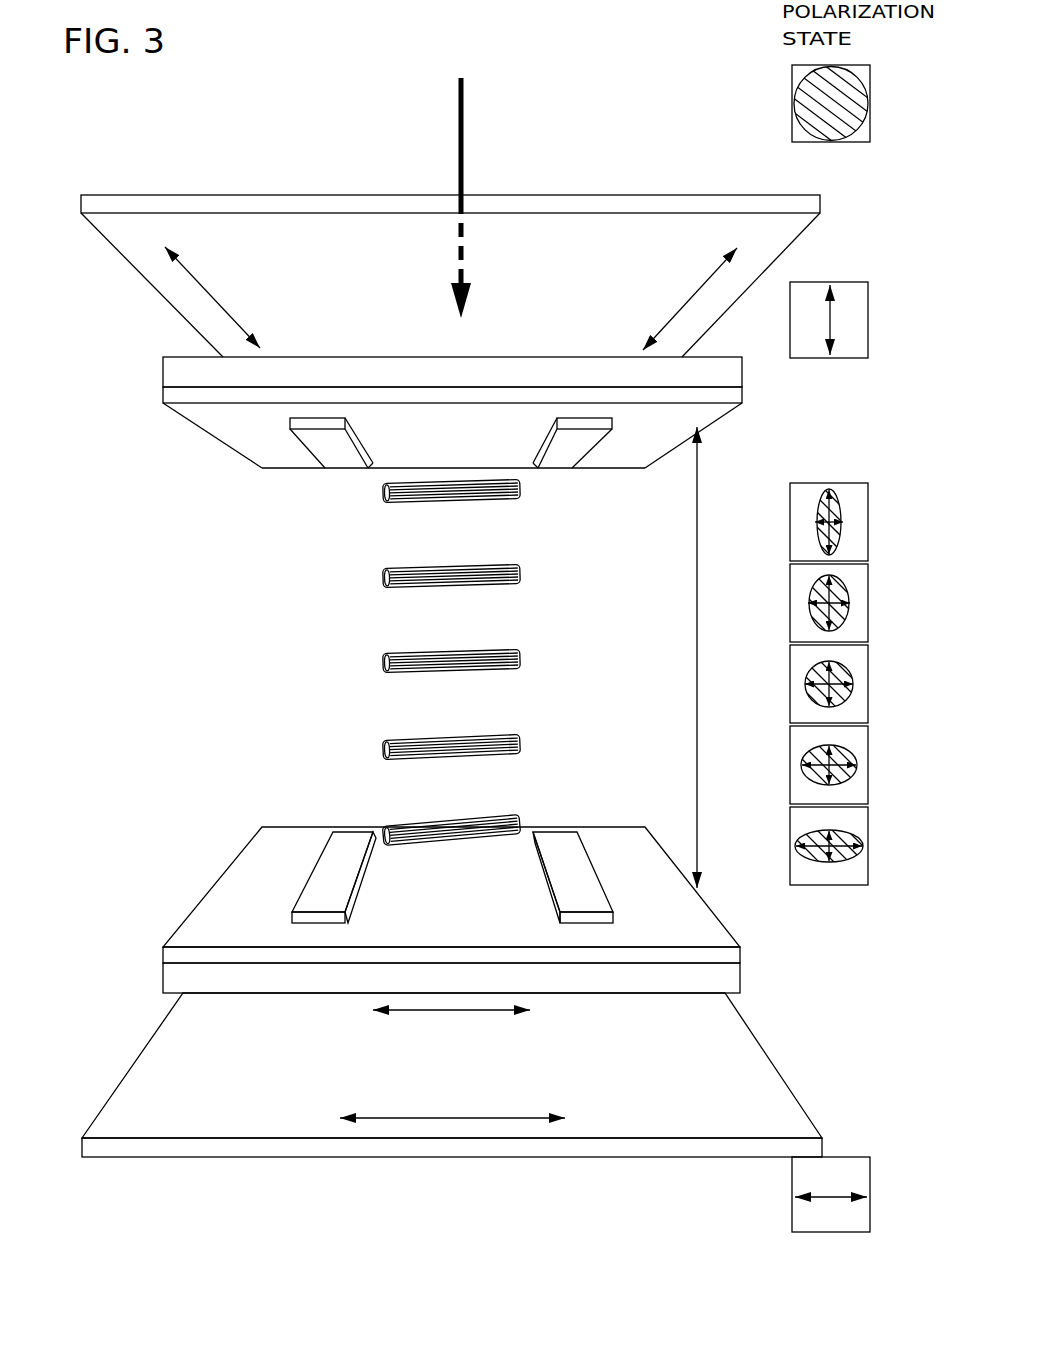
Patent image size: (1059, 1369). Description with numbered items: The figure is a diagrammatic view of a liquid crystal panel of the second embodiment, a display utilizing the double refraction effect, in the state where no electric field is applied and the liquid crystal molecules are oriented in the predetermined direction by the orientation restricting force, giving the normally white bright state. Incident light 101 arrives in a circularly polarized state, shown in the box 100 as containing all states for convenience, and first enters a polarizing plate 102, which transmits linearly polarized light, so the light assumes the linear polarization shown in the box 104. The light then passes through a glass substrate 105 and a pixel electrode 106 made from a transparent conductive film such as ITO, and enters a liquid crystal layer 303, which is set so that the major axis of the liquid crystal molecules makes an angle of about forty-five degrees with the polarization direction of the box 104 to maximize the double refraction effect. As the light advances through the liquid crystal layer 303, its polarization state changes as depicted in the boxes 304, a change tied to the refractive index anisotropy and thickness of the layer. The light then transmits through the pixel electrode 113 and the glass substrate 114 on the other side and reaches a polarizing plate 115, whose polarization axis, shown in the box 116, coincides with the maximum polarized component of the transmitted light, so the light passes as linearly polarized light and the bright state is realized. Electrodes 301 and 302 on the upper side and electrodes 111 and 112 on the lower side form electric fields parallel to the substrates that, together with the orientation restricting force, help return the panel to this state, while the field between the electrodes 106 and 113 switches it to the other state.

The box 100 is at (832, 123).
The incident light 101 is at (462, 122).
The polarizing plate 102 is at (115, 200).
The box 104 is at (807, 350).
The glass substrate 105 is at (163, 364).
The pixel electrode 106 is at (163, 400).
The electrode 111 is at (312, 868).
The electrode 112 is at (558, 852).
The pixel electrode 113 is at (740, 955).
The glass substrate 114 is at (740, 985).
The polarizing plate 115 is at (772, 1086).
The box 116 is at (840, 1163).
The electrode 301 is at (332, 457).
The electrode 302 is at (590, 437).
The liquid crystal layer 303 is at (358, 482).
The boxes 304 is at (767, 487).